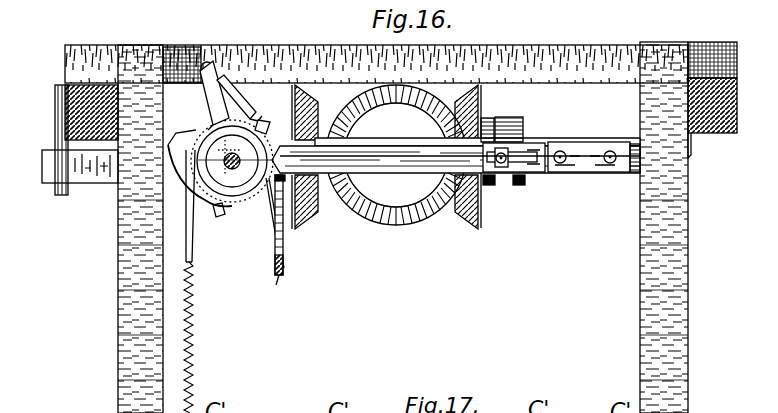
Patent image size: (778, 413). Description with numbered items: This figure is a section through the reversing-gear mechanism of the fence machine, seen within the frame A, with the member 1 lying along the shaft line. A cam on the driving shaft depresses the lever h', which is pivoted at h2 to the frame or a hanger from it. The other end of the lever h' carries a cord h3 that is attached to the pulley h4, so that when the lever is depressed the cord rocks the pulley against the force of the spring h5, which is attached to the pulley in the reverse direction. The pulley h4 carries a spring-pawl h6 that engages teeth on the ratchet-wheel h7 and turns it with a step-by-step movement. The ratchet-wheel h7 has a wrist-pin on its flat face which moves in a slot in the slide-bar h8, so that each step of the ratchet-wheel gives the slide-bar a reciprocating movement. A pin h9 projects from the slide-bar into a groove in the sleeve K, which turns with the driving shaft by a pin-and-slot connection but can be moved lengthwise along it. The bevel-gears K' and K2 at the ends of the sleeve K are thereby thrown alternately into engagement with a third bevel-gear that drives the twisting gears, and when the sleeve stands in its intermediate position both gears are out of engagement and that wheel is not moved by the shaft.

The frame A is at (66, 120).
The sliding bar 1 is at (592, 140).
The sleeve K is at (396, 170).
The bevel-gear K' is at (386, 161).
The bevel-gear K2 is at (393, 138).
The lever h' is at (293, 230).
The pivot h2 is at (397, 173).
The cord h3 is at (273, 211).
The pulley h4 is at (232, 168).
The spring h5 is at (194, 310).
The spring-pawl h6 is at (228, 80).
The ratchet-wheel h7 is at (258, 132).
The slide-bar h8 is at (532, 172).
The pin h9 is at (501, 167).